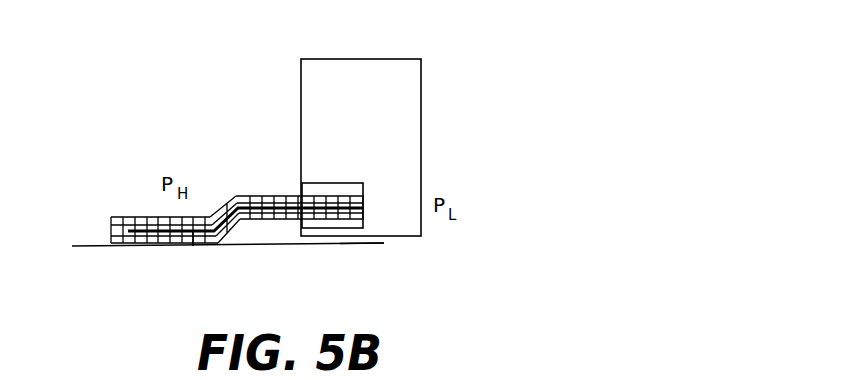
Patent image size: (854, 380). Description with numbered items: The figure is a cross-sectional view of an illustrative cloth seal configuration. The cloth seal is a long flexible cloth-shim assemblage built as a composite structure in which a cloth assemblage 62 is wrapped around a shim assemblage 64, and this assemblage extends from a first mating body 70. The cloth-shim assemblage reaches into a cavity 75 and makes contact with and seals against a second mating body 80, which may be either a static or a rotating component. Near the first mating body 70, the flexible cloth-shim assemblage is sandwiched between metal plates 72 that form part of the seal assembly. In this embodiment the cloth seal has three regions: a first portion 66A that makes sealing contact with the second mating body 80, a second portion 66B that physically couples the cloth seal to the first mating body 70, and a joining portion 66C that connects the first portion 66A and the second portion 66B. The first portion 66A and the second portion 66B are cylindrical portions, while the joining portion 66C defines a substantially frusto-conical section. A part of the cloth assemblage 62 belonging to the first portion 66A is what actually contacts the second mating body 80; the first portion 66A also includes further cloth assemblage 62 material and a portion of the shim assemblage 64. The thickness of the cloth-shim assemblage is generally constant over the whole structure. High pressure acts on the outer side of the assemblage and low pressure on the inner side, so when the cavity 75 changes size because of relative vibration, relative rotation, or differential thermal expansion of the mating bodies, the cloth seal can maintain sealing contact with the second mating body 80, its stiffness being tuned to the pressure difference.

The cloth assemblage 62 is at (279, 196).
The shim assemblage 64 is at (193, 246).
The first portion 66A is at (117, 216).
The second portion 66B is at (288, 219).
The joining portion 66C is at (219, 196).
The first mating body 70 is at (348, 59).
The metal plates 72 is at (322, 183).
The cavity 75 is at (384, 242).
The second mating body 80 is at (93, 247).